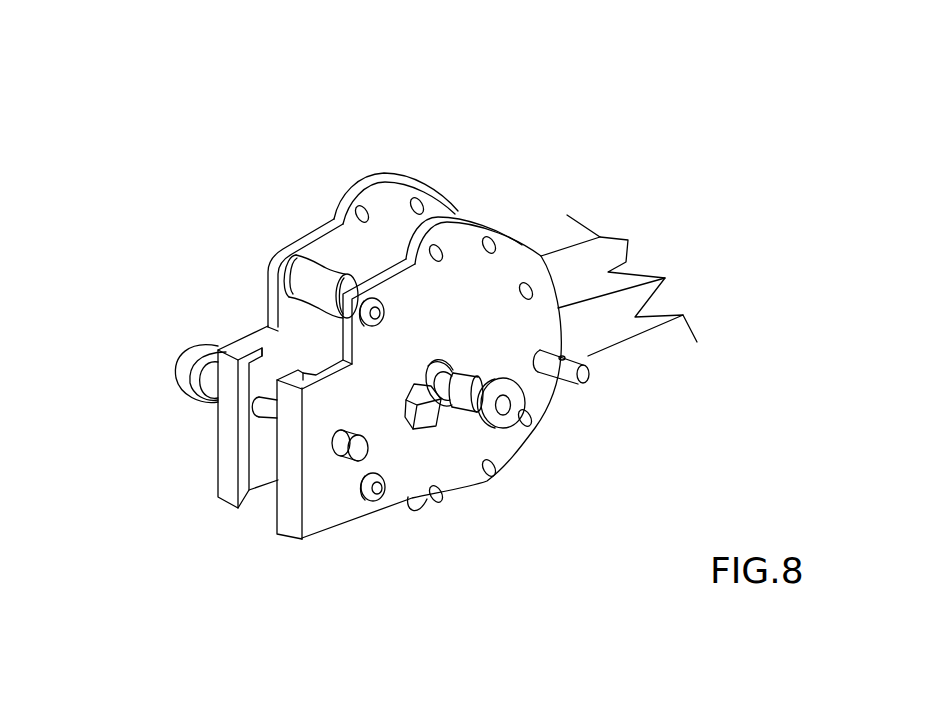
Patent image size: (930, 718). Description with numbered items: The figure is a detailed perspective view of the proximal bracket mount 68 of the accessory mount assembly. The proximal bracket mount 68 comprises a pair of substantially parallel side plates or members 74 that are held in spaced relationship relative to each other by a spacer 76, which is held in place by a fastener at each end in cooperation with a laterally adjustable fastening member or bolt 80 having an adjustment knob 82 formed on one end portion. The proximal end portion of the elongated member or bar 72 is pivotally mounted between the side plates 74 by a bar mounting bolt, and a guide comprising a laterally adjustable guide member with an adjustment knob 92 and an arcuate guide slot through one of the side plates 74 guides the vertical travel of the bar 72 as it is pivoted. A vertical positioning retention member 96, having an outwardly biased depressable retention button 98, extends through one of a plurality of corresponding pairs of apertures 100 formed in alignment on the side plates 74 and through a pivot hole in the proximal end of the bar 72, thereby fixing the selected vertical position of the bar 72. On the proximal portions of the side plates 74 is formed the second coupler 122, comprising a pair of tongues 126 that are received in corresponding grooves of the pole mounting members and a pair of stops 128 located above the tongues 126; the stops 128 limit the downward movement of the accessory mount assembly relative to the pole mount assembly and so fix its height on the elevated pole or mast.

The proximal bracket mount 68 is at (387, 151).
The elongated member or bar 72 is at (627, 263).
The side plates or members 74 is at (342, 250).
The spacer 76 is at (297, 283).
The laterally adjustable fastening member or bolt 80 is at (267, 412).
The adjustment knob 82 is at (180, 378).
The adjustment knob 92 is at (505, 410).
The vertical positioning retention member 96 is at (547, 370).
The depressable retention button 98 is at (560, 353).
The apertures 100 is at (421, 190).
The second coupler 122 is at (137, 435).
The tongues 126 is at (227, 417).
The stops 128 is at (292, 375).